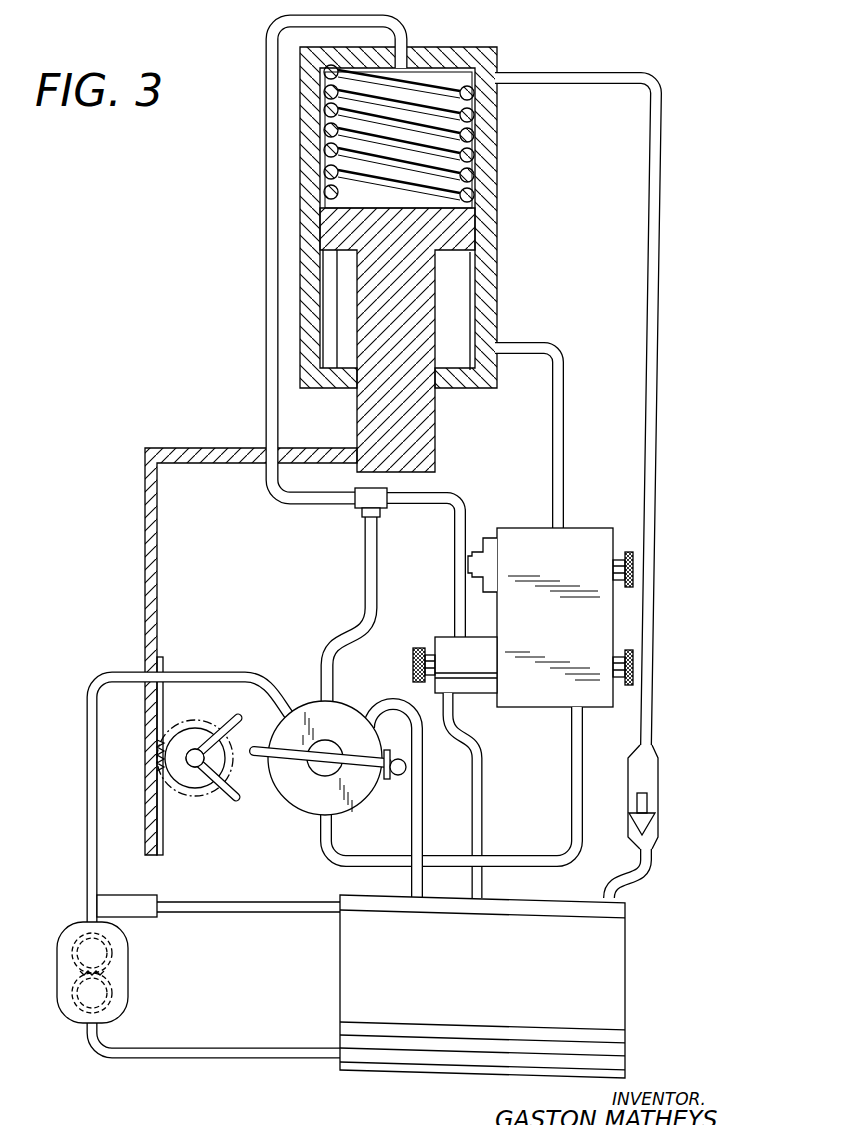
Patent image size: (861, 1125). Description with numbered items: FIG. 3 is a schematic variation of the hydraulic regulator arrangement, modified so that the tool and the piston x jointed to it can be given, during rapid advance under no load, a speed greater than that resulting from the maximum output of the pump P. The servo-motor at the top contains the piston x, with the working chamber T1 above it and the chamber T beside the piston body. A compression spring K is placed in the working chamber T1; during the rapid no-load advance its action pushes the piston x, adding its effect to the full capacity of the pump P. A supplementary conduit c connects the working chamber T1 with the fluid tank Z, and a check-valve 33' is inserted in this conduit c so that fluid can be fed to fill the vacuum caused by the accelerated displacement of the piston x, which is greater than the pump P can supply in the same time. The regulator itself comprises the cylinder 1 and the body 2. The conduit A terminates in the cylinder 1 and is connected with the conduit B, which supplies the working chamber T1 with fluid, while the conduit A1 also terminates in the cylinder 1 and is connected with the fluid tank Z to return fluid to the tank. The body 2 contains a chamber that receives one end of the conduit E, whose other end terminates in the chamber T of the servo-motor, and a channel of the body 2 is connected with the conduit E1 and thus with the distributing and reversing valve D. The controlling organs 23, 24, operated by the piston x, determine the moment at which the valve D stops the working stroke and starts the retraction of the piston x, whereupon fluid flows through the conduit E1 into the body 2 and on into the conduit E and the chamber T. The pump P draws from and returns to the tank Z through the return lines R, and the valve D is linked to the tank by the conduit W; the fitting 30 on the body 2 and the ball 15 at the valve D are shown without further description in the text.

The working chamber of the servo-motor T1 is at (489, 125).
The compression spring K is at (483, 180).
The piston x is at (468, 242).
The chamber of the servo-motor T is at (463, 296).
The supplementary conduit c is at (655, 342).
The conduit E is at (562, 365).
The conduit A is at (440, 498).
The stepped fitting 30 is at (491, 548).
The conduit B is at (365, 577).
The cylinder 1 is at (433, 640).
The body 2 is at (613, 622).
The controlling organ 23 is at (236, 720).
The controlling organ 24 is at (236, 796).
The distributing and reversing valve D is at (309, 800).
The conduit W is at (418, 740).
The ball 15 is at (406, 769).
The conduit A1 is at (480, 742).
The conduit E1 is at (578, 742).
The check-valve 33' is at (661, 821).
The return conduit R is at (90, 812).
The pump P is at (120, 975).
The fluid tank Z is at (612, 990).